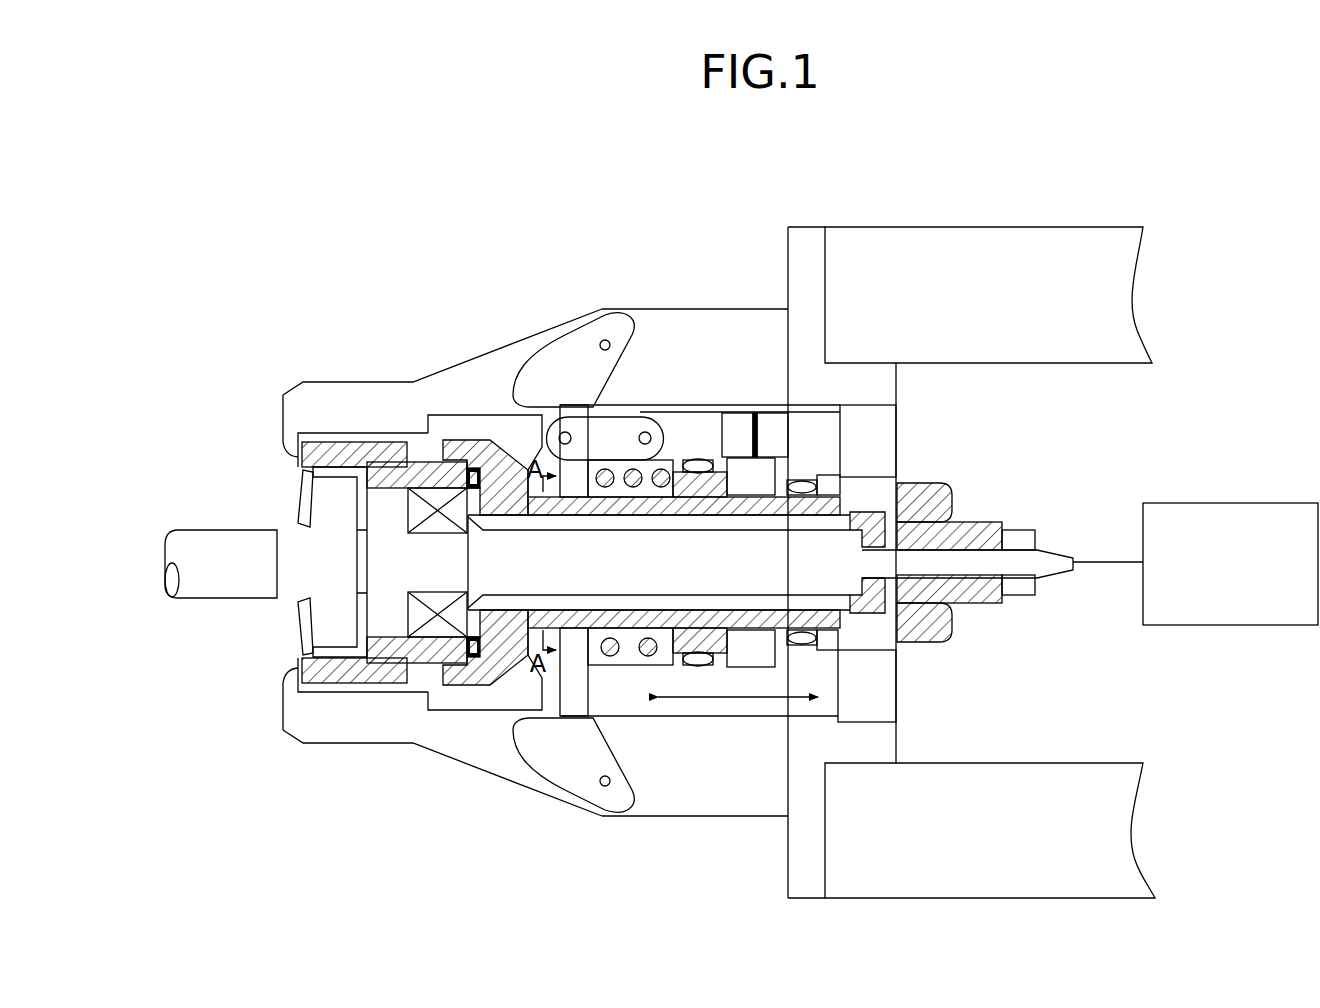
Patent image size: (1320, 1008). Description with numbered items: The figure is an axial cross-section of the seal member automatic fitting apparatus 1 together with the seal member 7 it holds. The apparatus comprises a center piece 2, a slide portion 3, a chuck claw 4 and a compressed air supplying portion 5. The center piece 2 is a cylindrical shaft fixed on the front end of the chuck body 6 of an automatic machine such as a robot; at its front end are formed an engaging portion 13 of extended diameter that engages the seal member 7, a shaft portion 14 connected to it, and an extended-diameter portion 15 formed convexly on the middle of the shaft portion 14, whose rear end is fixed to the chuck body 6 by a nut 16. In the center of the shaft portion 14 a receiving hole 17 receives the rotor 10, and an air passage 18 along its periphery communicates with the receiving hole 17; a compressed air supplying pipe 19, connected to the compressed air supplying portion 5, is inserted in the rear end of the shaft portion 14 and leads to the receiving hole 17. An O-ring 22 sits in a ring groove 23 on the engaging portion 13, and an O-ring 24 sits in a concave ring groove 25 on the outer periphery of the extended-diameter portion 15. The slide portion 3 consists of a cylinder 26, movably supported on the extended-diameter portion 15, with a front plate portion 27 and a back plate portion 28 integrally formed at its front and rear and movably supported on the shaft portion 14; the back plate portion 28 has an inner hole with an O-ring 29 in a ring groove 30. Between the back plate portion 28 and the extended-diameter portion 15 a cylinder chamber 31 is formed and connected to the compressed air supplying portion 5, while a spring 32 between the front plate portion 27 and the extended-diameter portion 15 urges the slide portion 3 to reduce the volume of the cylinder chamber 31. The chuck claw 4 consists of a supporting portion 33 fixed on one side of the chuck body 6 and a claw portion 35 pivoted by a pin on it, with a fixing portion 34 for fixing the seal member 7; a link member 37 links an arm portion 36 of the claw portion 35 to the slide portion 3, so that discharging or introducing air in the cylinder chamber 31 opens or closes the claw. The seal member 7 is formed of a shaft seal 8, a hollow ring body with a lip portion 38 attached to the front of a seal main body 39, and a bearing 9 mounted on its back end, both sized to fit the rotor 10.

The seal member automatic fitting apparatus 1 is at (786, 172).
The center piece 2 is at (483, 704).
The slide portion 3 is at (773, 720).
The chuck claw 4 is at (310, 390).
The compressed air supplying portion 5 is at (1226, 512).
The chuck body 6 is at (970, 235).
The seal member 7 is at (285, 627).
The shaft seal 8 is at (333, 650).
The bearing 9 is at (390, 640).
The rotor 10 is at (210, 538).
The engaging portion 13 is at (492, 628).
The shaft portion 14 is at (630, 630).
The extended-diameter portion 15 is at (718, 492).
The nut 16 is at (928, 492).
The receiving hole 17 is at (482, 725).
The air passage 18 is at (500, 512).
The compressed air supplying pipe 19 is at (1048, 570).
The O-ring 22 is at (470, 468).
The ring groove 23 is at (484, 465).
The O-ring 24 is at (698, 667).
The ring groove 25 is at (706, 666).
The cylinder 26 is at (652, 657).
The front plate portion 27 is at (557, 716).
The back plate portion 28 is at (832, 698).
The O-ring 29 is at (803, 482).
The ring groove 30 is at (818, 636).
The cylinder chamber 31 is at (770, 657).
The spring 32 is at (663, 470).
The supporting portion 33 is at (638, 322).
The fixing portion 34 is at (293, 440).
The claw portion 35 is at (291, 412).
The arm portion 36 is at (550, 404).
The link member 37 is at (587, 430).
The lip portion 38 is at (294, 588).
The seal main body 39 is at (347, 443).